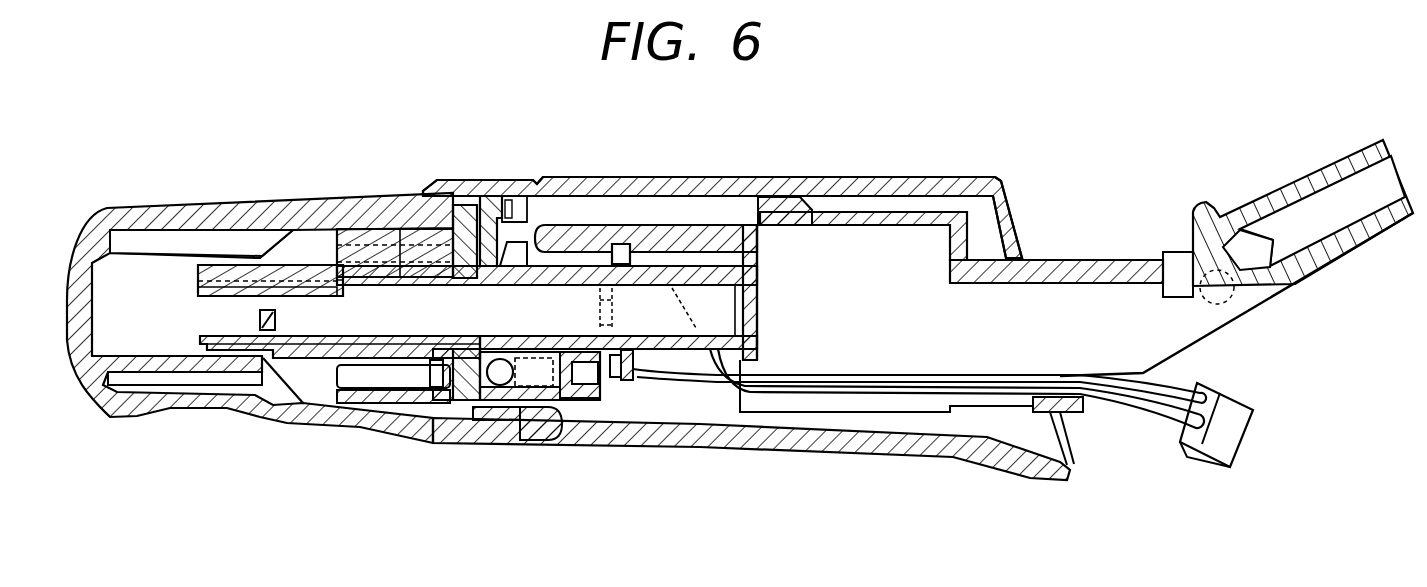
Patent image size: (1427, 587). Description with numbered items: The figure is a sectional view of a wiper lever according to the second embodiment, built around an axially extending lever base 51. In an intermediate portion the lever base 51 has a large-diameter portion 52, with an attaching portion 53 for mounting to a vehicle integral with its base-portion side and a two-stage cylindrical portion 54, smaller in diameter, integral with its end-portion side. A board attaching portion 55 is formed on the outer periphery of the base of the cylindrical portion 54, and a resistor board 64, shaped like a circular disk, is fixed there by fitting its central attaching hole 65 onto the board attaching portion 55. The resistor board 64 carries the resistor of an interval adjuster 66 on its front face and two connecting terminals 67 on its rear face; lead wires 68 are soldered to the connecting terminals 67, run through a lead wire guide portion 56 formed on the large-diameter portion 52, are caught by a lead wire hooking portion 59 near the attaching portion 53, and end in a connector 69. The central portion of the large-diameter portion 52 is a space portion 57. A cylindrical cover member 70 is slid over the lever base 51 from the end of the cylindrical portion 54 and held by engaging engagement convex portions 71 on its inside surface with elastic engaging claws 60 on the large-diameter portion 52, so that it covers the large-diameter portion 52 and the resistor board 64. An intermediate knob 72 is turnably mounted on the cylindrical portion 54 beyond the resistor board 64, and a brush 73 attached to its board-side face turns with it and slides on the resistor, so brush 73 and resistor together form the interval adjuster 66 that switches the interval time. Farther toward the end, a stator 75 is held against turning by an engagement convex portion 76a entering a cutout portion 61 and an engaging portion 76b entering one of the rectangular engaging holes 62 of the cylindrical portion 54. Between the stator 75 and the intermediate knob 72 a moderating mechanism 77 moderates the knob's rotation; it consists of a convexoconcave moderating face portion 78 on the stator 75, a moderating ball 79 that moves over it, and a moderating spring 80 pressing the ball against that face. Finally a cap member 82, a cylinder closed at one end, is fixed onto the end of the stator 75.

The lever base 51 is at (1070, 260).
The large-diameter portion 52 is at (912, 425).
The attaching portion 53 is at (1265, 308).
The two-stage cylindrical portion 54 is at (393, 229).
The board attaching portion 55 is at (653, 352).
The lead wire guide portion 56 is at (848, 402).
The space portion 57 is at (884, 250).
The lead wire hooking portion 59 is at (1078, 412).
The elastic engaging claws 60 is at (770, 204).
The cutout portion 61 is at (302, 297).
The rectangular engaging holes 62 is at (270, 360).
The resistor board 64 is at (628, 380).
The attaching hole 65 is at (602, 290).
The interval adjuster 66 is at (613, 392).
The connecting terminals 67 is at (640, 245).
The lead wires 68 is at (711, 352).
The connector 69 is at (1233, 433).
The cover member 70 is at (718, 180).
The engagement convex portions 71 is at (804, 197).
The intermediate knob 72 is at (466, 180).
The brush 73 is at (606, 244).
The stator 75 is at (357, 228).
The engagement convex portion 76a is at (222, 283).
The engaging portion 76b is at (258, 318).
The moderating mechanism 77 is at (500, 394).
The moderating face portion 78 is at (470, 447).
The moderating ball 79 is at (514, 407).
The moderating spring 80 is at (565, 440).
The cap member 82 is at (106, 207).